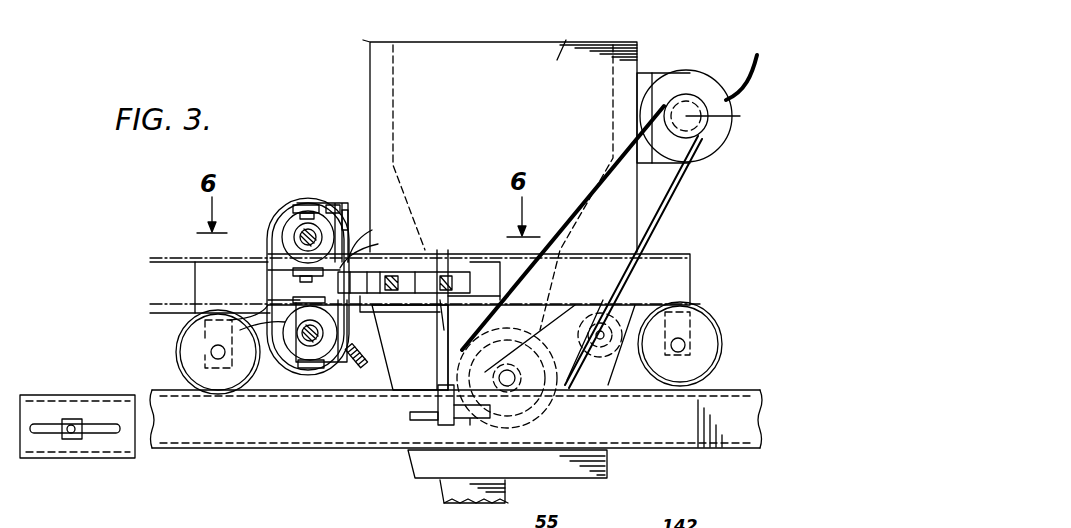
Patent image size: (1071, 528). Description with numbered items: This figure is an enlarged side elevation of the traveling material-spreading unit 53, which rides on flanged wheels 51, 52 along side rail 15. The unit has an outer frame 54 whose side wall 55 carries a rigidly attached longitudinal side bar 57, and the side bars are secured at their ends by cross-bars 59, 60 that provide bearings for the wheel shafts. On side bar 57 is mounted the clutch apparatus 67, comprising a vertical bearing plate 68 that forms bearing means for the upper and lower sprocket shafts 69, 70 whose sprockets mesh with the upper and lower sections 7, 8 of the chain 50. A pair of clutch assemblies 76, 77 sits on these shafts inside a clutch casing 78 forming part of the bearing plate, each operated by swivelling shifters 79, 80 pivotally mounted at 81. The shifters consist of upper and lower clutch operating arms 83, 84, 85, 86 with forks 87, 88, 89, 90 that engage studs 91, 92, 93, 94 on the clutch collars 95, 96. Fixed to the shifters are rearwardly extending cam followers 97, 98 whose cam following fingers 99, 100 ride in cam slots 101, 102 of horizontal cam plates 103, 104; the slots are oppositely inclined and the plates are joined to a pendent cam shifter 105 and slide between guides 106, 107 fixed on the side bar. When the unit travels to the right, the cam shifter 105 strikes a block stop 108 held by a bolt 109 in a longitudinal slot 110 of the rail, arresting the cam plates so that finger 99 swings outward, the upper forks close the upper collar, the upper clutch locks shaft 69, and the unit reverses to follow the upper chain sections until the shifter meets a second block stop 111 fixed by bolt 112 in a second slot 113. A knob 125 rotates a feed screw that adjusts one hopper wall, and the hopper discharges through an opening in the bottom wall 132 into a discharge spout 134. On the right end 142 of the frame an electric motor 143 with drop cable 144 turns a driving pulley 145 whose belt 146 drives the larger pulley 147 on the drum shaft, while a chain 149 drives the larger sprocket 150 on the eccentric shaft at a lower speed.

The upper chain section 7 is at (178, 262).
The lower chain section 8 is at (168, 312).
The side rail 15 is at (637, 446).
The chain 50 is at (160, 262).
The flanged wheel 51 is at (178, 364).
The flanged wheel 52 is at (708, 322).
The material-spreading unit 53 is at (368, 42).
The outer frame 54 is at (370, 92).
The side wall 55 is at (568, 37).
The side bar 57 is at (690, 272).
The cross-bar 59 is at (211, 344).
The cross-bar 60 is at (716, 345).
The clutch apparatus 67 is at (278, 204).
The bearing plate 68 is at (270, 292).
The upper sprocket shaft 69 is at (296, 237).
The lower sprocket shaft 70 is at (290, 337).
The upper clutch assembly 76 is at (287, 222).
The lower clutch assembly 77 is at (258, 318).
The clutch casing 78 is at (303, 205).
The shifter 79 is at (346, 215).
The shifter 80 is at (346, 316).
The pivot mounting 81 is at (352, 270).
The upper clutch operating arm 83 is at (326, 202).
The upper clutch operating arm 84 is at (358, 238).
The lower clutch operating arm 85 is at (308, 282).
The lower clutch operating arm 86 is at (325, 375).
The fork 87 is at (308, 212).
The fork 88 is at (296, 270).
The fork 89 is at (296, 312).
The fork 90 is at (305, 375).
The stud 91 is at (282, 215).
The stud 92 is at (300, 245).
The stud 93 is at (280, 322).
The stud 94 is at (306, 356).
The upper clutch collar 95 is at (333, 204).
The lower clutch collar 96 is at (298, 342).
The cam follower 97 is at (396, 272).
The cam follower 98 is at (410, 347).
The cam following finger 99 is at (418, 265).
The cam following finger 100 is at (440, 310).
The cam slot 101 is at (425, 272).
The cam slot 102 is at (440, 341).
The upper cam plate 103 is at (462, 262).
The lower cam plate 104 is at (470, 280).
The cam shifter 105 is at (438, 363).
The guide 106 is at (462, 268).
The guide 107 is at (466, 301).
The block stop 108 is at (438, 398).
The screw or bolt 109 is at (468, 425).
The longitudinal slot 110 is at (432, 420).
The second block stop 111 is at (82, 428).
The screw or bolt 112 is at (71, 418).
The second longitudinal slot 113 is at (95, 438).
The knob 125 is at (352, 366).
The bottom wall 132 is at (562, 478).
The discharge spout 134 is at (442, 498).
The right end 142 is at (641, 47).
The electric motor 143 is at (700, 72).
The drop cable 144 is at (752, 75).
The driving pulley 145 is at (706, 123).
The belt 146 is at (676, 185).
The pulley 147 is at (516, 366).
The chain 149 is at (552, 392).
The chain sprocket 150 is at (601, 342).